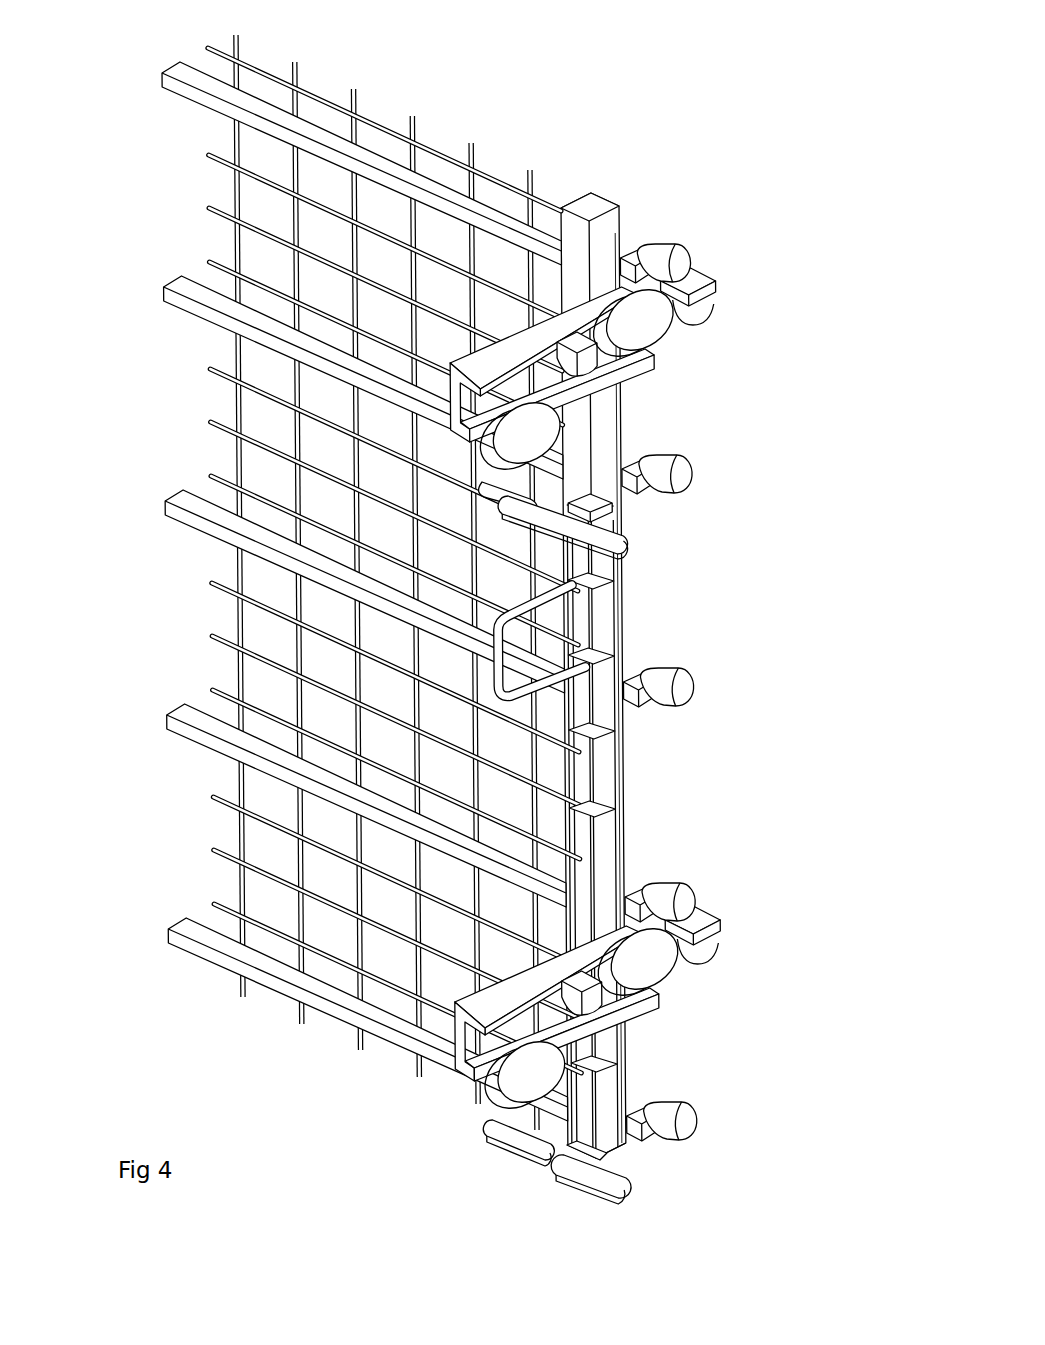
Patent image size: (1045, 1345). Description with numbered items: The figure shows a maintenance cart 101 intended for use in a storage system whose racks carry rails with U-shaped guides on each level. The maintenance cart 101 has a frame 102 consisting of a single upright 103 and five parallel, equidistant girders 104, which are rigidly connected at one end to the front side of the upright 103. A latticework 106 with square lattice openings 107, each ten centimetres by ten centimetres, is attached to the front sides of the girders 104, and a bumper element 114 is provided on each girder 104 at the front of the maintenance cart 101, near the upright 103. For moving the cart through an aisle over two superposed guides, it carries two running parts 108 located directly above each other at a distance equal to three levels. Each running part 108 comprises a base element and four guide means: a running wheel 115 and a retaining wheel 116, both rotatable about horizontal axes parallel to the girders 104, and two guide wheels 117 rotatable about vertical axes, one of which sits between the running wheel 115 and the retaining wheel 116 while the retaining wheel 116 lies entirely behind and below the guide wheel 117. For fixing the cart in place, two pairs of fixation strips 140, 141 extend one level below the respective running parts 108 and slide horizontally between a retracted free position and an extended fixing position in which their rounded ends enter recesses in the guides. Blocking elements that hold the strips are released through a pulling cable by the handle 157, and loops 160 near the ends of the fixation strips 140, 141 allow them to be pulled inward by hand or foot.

The maintenance cart 101 is at (632, 105).
The frame 102 is at (668, 791).
The upright 103 is at (616, 748).
The girders 104 is at (178, 85).
The latticework 106 is at (438, 145).
The lattice openings 107 is at (262, 205).
The running parts 108 is at (682, 379).
The bumper element 114 is at (672, 262).
The running wheel 115 is at (649, 975).
The retaining wheel 116 is at (509, 1085).
The guide wheels 117 is at (690, 962).
The fixation strips 140 is at (603, 520).
The fixation strips 141 is at (630, 550).
The handle 157 is at (552, 639).
The loops 160 is at (473, 1137).